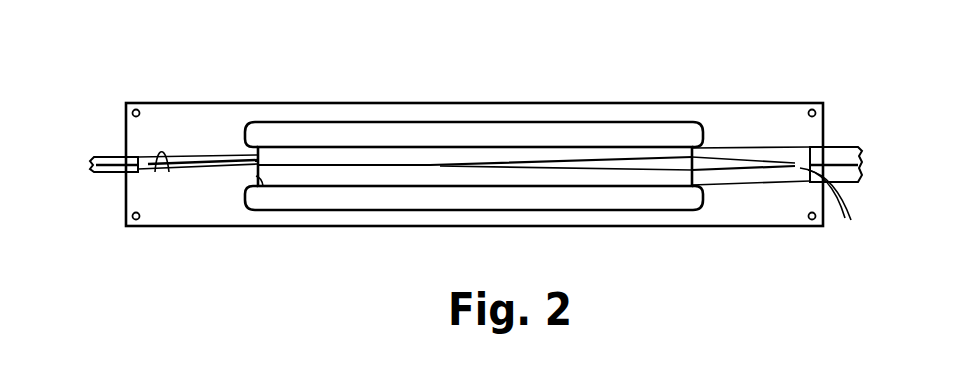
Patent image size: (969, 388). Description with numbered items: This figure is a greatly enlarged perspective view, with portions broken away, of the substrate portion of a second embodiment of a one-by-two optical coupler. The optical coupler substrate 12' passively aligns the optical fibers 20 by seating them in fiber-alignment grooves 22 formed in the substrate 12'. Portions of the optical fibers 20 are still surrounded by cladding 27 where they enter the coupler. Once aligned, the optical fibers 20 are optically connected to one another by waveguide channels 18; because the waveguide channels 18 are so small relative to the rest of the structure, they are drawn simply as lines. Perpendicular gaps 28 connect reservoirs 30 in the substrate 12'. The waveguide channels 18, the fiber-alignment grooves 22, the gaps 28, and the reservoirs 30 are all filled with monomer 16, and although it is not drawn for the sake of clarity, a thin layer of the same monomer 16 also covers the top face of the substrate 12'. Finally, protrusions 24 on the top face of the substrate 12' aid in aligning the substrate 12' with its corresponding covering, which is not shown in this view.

The optical coupler substrate 12' is at (474, 120).
The monomer 16 is at (412, 136).
The waveguide channels 18 is at (452, 168).
The optical fibers 20 is at (232, 166).
The fiber-alignment grooves 22 is at (169, 172).
The protrusions 24 is at (138, 111).
The cladding 27 is at (105, 162).
The perpendicular gaps 28 is at (261, 182).
The reservoirs 30 is at (326, 123).